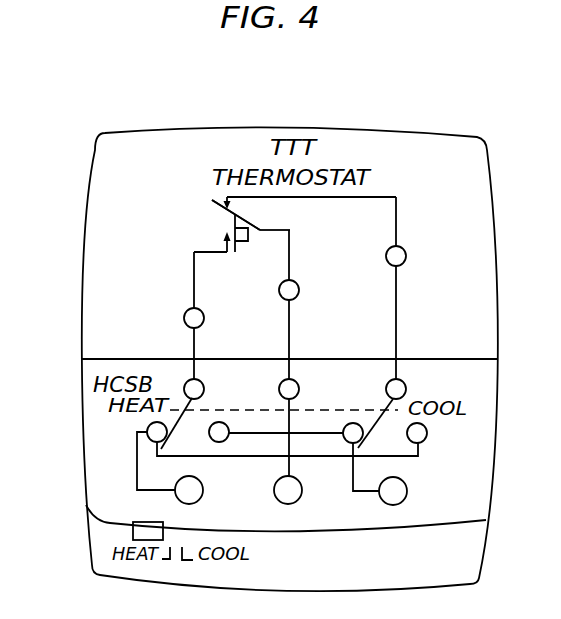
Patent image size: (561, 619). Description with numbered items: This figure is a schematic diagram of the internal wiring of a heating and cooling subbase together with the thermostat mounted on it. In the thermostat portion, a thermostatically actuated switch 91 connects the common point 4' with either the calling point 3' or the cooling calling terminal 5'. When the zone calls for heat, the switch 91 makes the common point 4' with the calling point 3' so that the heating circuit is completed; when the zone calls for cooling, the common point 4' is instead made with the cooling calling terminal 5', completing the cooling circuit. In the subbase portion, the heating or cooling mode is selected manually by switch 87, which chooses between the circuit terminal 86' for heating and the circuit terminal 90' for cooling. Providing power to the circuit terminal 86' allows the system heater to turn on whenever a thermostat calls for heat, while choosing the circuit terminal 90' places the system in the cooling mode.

The thermostatically actuated switch 91 is at (222, 228).
The calling point 3' is at (208, 317).
The common point 4' is at (303, 289).
The cooling calling terminal 5' is at (409, 255).
The circuit terminal 90' is at (206, 499).
The circuit terminal 86' is at (417, 500).
The switch 87 is at (120, 531).